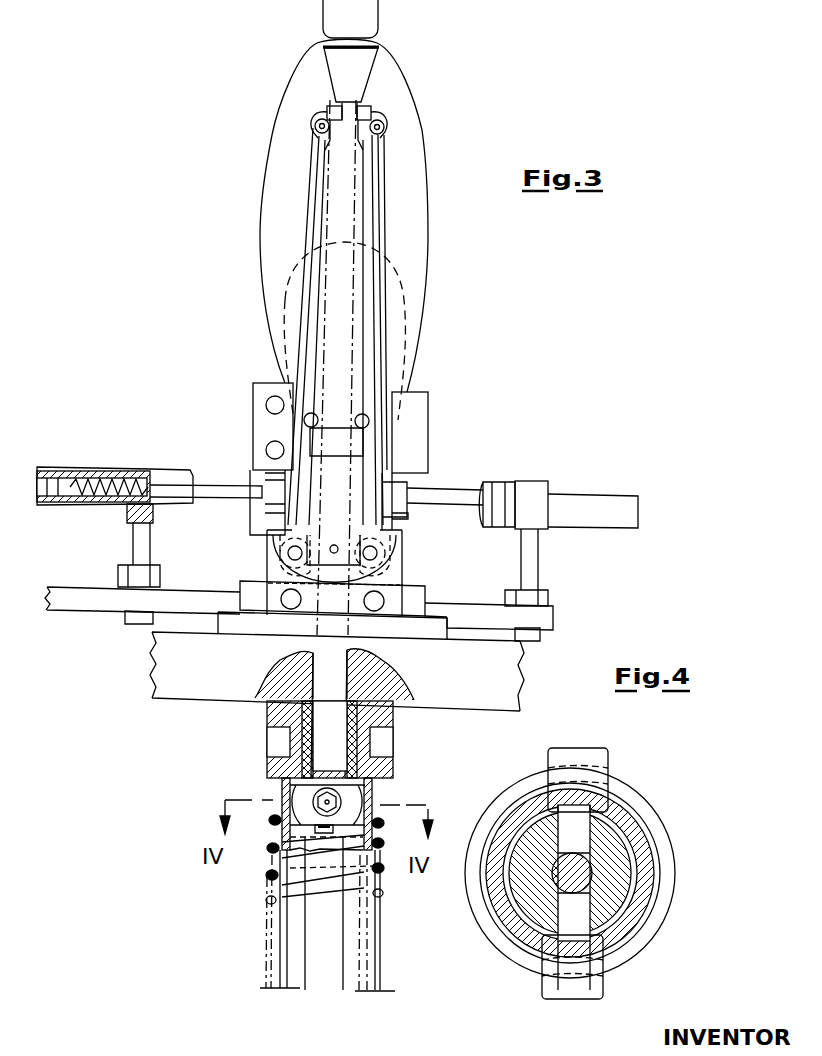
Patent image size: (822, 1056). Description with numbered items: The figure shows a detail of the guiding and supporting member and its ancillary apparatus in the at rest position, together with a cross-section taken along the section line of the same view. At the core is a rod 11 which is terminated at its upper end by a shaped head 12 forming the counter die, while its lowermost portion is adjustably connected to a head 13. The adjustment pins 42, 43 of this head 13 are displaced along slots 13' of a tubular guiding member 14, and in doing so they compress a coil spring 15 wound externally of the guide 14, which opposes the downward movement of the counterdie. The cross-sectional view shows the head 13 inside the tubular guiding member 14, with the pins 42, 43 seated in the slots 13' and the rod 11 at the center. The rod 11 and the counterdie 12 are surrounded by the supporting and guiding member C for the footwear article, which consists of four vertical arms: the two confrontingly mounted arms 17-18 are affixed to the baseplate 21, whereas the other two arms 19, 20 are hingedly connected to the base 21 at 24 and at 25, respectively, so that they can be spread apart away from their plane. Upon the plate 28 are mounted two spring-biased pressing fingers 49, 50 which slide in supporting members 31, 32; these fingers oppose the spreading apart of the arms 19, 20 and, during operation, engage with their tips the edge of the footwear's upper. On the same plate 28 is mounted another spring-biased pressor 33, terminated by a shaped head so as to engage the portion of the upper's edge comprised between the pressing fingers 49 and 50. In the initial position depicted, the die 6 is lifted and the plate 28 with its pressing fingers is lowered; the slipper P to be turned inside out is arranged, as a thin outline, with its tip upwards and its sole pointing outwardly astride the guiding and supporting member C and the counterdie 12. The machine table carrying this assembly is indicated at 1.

In FIG. 3, the machine table plate 1 is at (178, 707).
In FIG. 3, the die 6 is at (380, 5).
In FIG. 3, the rod 11 is at (330, 676).
In FIG. 4, the rod 11 is at (577, 872).
In FIG. 3, the shaped head (counterdie) 12 is at (372, 68).
In FIG. 3, the head 13 is at (359, 776).
In FIG. 4, the head 13 is at (610, 863).
In FIG. 3, the slots 13' is at (366, 913).
In FIG. 4, the slots 13' is at (579, 877).
In FIG. 3, the tubular guiding member 14 is at (355, 908).
In FIG. 4, the tubular guiding member 14 is at (647, 918).
In FIG. 3, the coil spring 15 is at (274, 840).
In FIG. 4, the coil spring 15 is at (645, 952).
In FIG. 3, the arms 17-18 is at (345, 340).
In FIG. 3, the arm 19 is at (382, 357).
In FIG. 3, the arm 20 is at (303, 322).
In FIG. 3, the baseplate 21 is at (418, 600).
In FIG. 3, the hinge 24 is at (286, 549).
In FIG. 3, the hinge 25 is at (396, 556).
In FIG. 3, the plate 28 is at (203, 600).
In FIG. 3, the supporting member 31 is at (588, 505).
In FIG. 3, the supporting member 32 is at (105, 468).
In FIG. 3, the pressor 33 is at (410, 517).
In FIG. 3, the adjustment pin 42 is at (343, 812).
In FIG. 4, the adjustment pin 42 is at (580, 993).
In FIG. 4, the adjustment pin 43 is at (586, 757).
In FIG. 3, the pressing finger 49 is at (409, 496).
In FIG. 3, the pressing finger 50 is at (262, 488).
In FIG. 3, the slipper P is at (425, 181).
In FIG. 3, the guiding and supporting member C is at (398, 294).